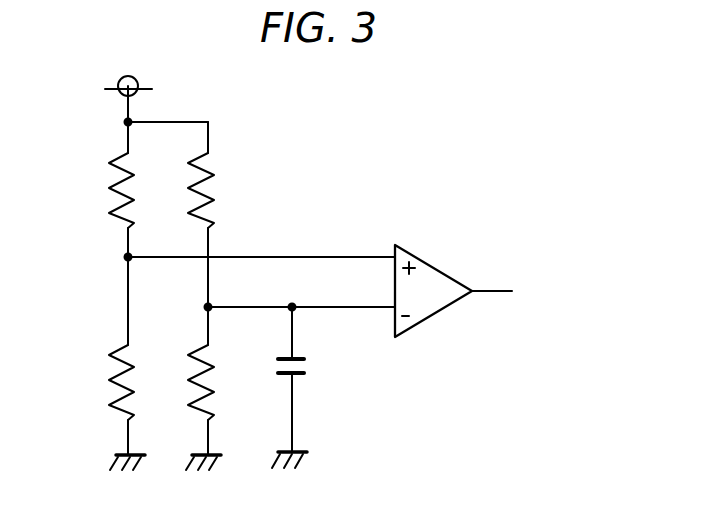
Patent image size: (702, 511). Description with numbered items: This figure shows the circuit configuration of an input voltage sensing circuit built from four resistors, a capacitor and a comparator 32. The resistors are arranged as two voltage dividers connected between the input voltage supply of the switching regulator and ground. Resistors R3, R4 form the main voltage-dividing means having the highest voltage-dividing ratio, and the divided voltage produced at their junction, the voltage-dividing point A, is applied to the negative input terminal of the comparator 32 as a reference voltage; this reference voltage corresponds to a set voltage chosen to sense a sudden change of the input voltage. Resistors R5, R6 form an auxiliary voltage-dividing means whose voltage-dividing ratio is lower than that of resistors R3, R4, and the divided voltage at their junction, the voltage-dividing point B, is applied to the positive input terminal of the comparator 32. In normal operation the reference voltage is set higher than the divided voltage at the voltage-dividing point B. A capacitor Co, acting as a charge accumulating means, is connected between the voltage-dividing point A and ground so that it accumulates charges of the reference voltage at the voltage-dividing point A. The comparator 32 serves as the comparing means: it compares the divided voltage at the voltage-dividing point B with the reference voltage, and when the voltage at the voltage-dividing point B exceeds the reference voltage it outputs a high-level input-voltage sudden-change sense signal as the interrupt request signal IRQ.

The comparator 32 is at (442, 271).
The resistor R5 is at (102, 190).
The resistor R3 is at (219, 190).
The resistor R6 is at (102, 382).
The resistor R4 is at (219, 382).
The capacitor Co is at (306, 378).
The voltage-dividing point B is at (247, 255).
The voltage-dividing point A is at (288, 305).
The interrupt request signal IRQ is at (516, 292).